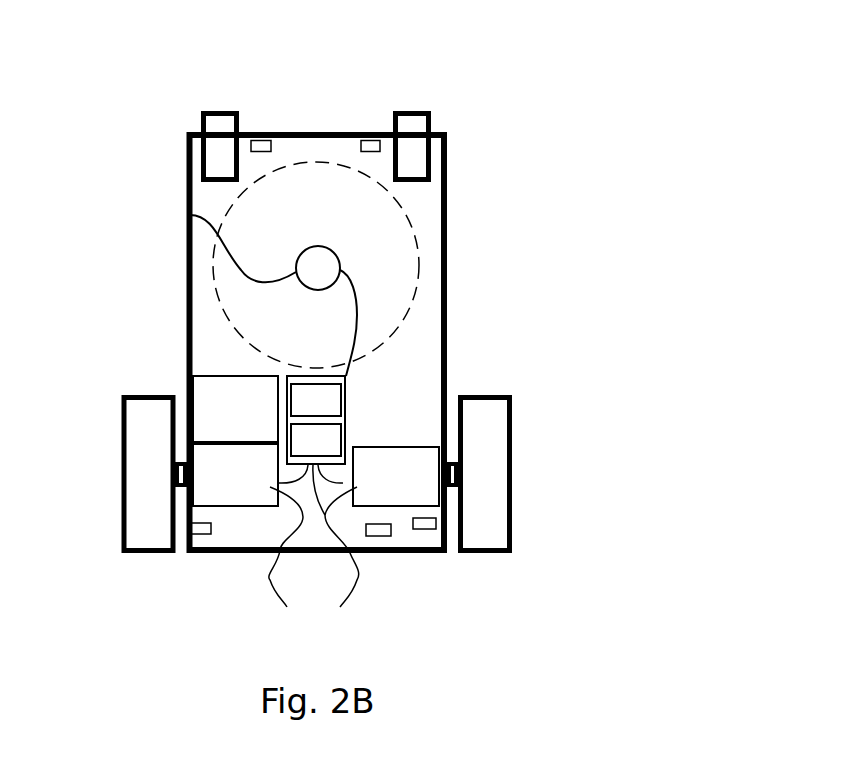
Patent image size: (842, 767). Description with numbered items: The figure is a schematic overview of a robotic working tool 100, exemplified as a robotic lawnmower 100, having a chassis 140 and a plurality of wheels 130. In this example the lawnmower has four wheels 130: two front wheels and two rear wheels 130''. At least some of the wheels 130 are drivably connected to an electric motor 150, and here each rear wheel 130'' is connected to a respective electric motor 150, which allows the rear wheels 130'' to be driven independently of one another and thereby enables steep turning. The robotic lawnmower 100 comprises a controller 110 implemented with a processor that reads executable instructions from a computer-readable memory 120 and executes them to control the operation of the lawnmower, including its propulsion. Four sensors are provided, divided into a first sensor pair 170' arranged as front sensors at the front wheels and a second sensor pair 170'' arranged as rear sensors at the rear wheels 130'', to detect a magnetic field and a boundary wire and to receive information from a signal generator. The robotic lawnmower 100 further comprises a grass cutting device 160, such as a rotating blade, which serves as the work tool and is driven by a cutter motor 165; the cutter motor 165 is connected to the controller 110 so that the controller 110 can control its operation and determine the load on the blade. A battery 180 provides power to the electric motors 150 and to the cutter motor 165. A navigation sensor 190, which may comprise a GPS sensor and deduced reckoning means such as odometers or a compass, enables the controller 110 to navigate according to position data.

The robotic lawnmower 100 is at (176, 174).
The controller 110 is at (403, 383).
The memory 120 is at (346, 440).
The wheel 130 is at (316, 103).
The rear wheel 130'' is at (280, 525).
The chassis 140 is at (212, 553).
The electric motor 150 is at (314, 551).
The grass cutting device 160 is at (223, 308).
The cutter motor 165 is at (190, 216).
The first sensor pair 170' is at (315, 95).
The second sensor pair 170'' is at (276, 579).
The battery 180 is at (203, 401).
The navigation sensor 190 is at (367, 536).